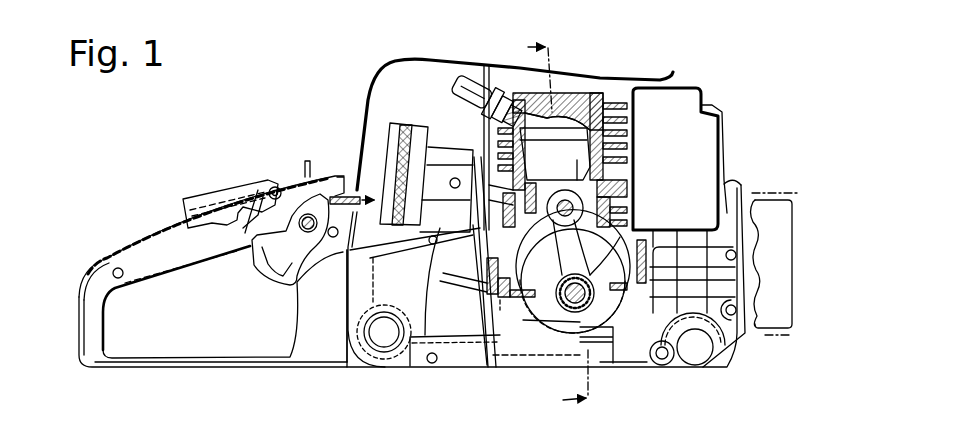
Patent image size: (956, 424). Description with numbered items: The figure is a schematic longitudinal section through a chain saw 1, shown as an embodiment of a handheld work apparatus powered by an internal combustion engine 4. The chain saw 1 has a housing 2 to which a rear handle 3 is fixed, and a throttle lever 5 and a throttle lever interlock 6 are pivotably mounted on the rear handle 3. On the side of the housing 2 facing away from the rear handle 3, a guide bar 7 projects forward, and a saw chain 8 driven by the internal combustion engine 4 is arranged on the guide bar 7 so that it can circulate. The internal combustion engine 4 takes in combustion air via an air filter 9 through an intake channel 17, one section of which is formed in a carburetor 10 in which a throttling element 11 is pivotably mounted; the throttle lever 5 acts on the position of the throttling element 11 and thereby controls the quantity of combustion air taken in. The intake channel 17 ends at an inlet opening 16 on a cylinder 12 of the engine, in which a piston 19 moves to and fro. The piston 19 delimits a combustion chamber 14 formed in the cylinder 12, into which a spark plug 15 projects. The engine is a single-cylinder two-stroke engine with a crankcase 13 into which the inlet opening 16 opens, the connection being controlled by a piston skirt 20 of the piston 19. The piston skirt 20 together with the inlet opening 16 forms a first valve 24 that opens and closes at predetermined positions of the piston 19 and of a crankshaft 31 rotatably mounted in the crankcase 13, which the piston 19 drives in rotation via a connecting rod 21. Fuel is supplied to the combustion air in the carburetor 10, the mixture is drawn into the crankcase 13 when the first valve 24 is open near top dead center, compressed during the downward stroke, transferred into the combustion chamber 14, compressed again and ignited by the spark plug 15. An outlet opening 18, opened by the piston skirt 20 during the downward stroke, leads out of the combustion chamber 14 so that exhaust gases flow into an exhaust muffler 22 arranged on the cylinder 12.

The chain saw 1 is at (226, 124).
The housing 2 is at (452, 62).
The rear handle 3 is at (160, 227).
The internal combustion engine 4 is at (512, 322).
The throttle lever 5 is at (295, 284).
The throttle lever interlock 6 is at (204, 197).
The guide bar 7 is at (777, 215).
The saw chain 8 is at (763, 193).
The air filter 9 is at (398, 140).
The carburetor 10 is at (443, 153).
The throttling element 11 is at (462, 166).
The cylinder 12 is at (590, 160).
The crankcase 13 is at (533, 317).
The combustion chamber 14 is at (566, 127).
The spark plug 15 is at (510, 90).
The inlet opening 16 is at (496, 258).
The intake channel 17 is at (430, 193).
The outlet opening 18 is at (634, 138).
The piston 19 is at (568, 128).
The piston skirt 20 is at (530, 197).
The connecting rod 21 is at (582, 308).
The exhaust muffler 22 is at (687, 227).
The first valve 24 is at (607, 292).
The crankshaft 31 is at (570, 303).